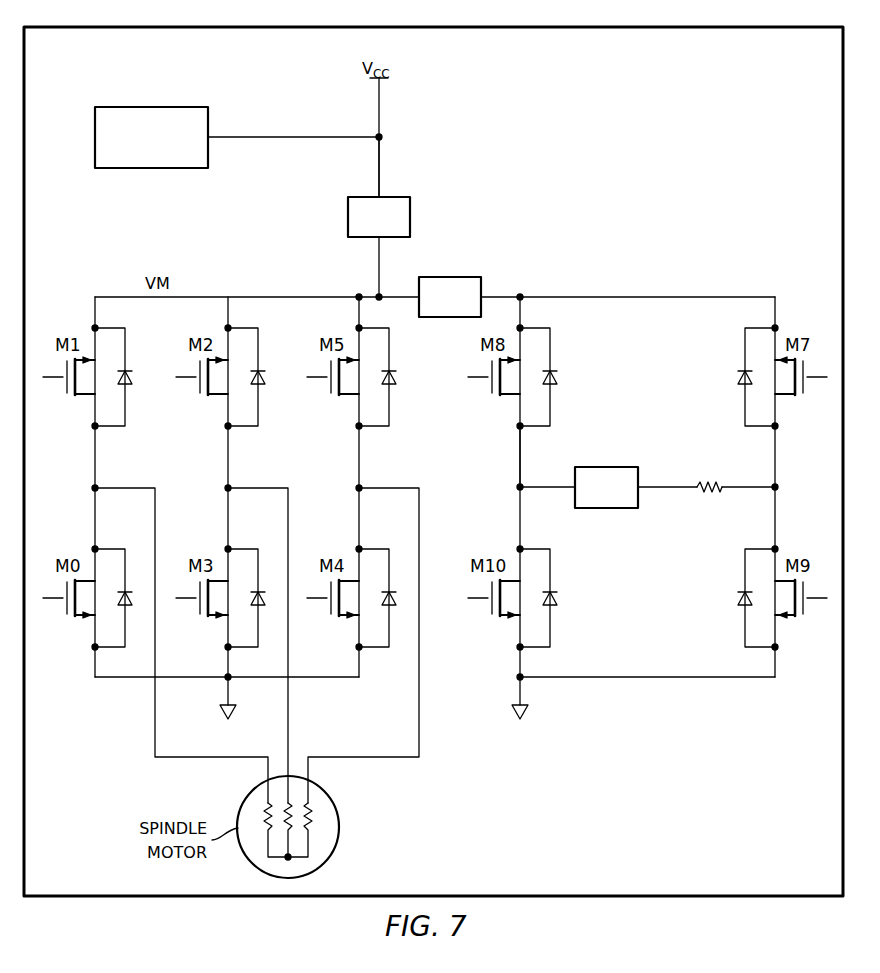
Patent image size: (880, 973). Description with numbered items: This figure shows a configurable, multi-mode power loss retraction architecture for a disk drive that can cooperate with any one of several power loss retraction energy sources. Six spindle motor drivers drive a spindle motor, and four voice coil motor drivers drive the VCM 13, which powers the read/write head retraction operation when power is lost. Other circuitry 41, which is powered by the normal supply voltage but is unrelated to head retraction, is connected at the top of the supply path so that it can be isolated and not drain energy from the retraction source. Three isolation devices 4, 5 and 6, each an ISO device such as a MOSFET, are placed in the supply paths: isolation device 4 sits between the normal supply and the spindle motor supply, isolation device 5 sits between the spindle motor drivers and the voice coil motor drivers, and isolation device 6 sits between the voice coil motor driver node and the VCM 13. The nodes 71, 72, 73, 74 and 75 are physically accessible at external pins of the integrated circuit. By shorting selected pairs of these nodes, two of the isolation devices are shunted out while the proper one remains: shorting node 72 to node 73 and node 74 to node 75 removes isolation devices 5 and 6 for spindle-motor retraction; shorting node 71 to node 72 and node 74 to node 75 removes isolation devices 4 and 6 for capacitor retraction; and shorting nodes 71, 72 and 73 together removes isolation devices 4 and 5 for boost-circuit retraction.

The other circuitry 41 is at (150, 107).
The externally accessible node 71 is at (381, 177).
The isolation device 4 is at (348, 215).
The externally accessible node 72 is at (379, 277).
The isolation device 5 is at (450, 277).
The externally accessible node 73 is at (522, 293).
The externally accessible node 74 is at (513, 440).
The isolation device 6 is at (607, 467).
The externally accessible node 75 is at (660, 485).
The VCM 13 is at (708, 497).